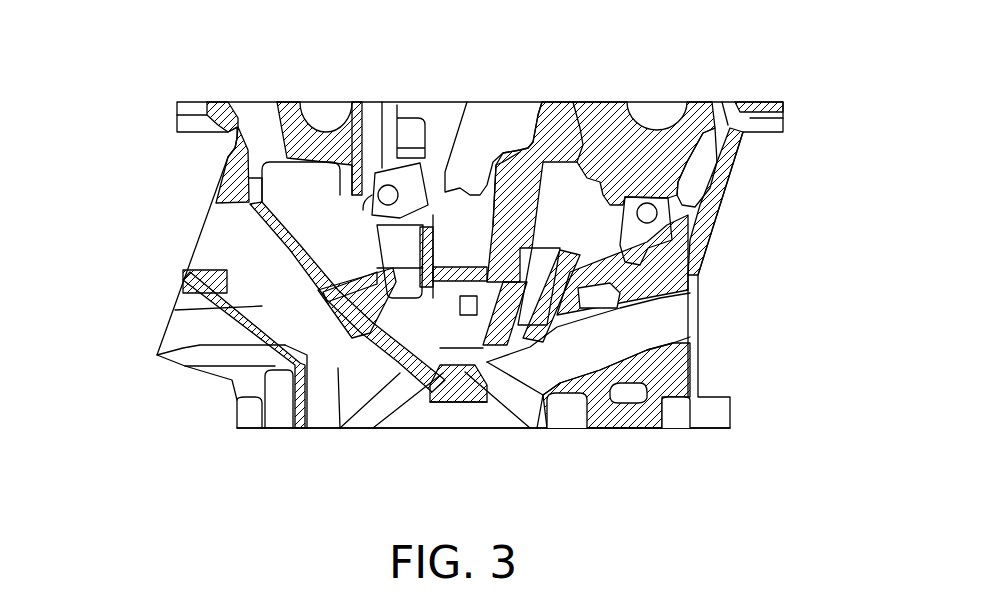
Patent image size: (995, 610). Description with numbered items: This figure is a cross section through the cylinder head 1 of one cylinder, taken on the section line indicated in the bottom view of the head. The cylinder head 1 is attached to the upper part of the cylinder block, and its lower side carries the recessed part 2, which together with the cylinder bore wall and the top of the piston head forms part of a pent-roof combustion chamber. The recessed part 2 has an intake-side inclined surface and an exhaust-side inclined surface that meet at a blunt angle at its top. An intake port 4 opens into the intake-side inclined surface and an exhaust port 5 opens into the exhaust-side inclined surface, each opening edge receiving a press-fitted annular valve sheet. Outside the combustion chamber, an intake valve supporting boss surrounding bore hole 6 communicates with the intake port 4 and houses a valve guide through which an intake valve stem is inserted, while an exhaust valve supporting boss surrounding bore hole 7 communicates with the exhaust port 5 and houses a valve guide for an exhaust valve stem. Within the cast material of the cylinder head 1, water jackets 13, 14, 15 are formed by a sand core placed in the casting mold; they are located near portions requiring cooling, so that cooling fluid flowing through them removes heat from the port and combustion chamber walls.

The cylinder head 1 is at (470, 265).
The recessed part 2 is at (483, 362).
The intake port 4 is at (588, 360).
The exhaust port 5 is at (231, 349).
The intake valve supporting boss surrounding bore hole 6 is at (531, 296).
The exhaust valve supporting boss surrounding bore hole 7 is at (368, 297).
The water jacket 13 is at (312, 386).
The water jacket 14 is at (622, 265).
The water jacket 15 is at (628, 393).